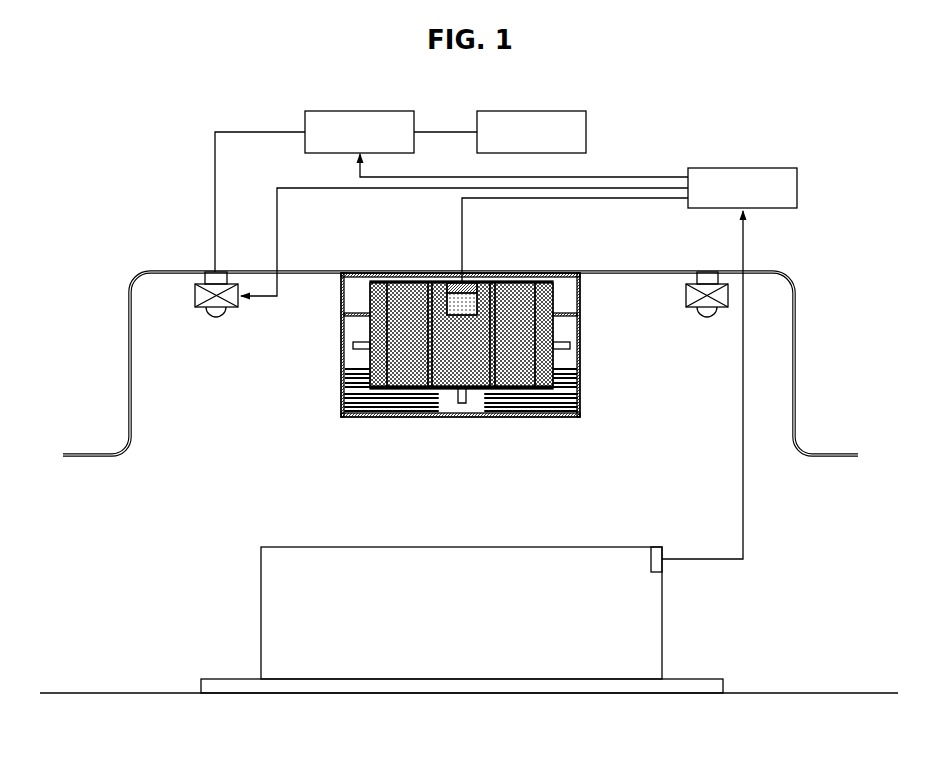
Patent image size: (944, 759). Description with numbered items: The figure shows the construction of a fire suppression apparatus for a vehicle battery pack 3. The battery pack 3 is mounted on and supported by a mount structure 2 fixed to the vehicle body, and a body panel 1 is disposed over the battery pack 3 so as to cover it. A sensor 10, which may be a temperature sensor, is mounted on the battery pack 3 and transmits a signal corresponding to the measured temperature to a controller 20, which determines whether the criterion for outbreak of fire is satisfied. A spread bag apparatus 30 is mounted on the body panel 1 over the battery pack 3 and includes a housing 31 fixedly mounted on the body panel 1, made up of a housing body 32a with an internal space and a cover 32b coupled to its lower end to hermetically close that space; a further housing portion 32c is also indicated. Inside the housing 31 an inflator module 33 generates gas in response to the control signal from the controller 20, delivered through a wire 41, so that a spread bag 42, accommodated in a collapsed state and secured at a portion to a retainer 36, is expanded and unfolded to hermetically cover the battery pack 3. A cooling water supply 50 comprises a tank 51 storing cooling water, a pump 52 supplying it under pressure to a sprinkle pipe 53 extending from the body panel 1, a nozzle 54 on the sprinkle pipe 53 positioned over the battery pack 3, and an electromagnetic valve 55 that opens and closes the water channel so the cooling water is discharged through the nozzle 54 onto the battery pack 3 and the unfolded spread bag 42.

The body panel 1 is at (797, 370).
The mount structure 2 is at (227, 684).
The battery pack 3 is at (268, 569).
The sensor 10 is at (656, 552).
The controller 20 is at (785, 168).
The spread bag apparatus 30 is at (477, 359).
The housing 31 is at (524, 423).
The housing body 32a is at (580, 393).
The cover 32b is at (550, 417).
The bottom plate 32c is at (462, 417).
The inflator module 33 is at (355, 328).
The retainer 36 is at (428, 390).
The wire 41 is at (462, 248).
The spread bag 42 is at (370, 407).
The cooling water supply 50 is at (170, 313).
The tank 51 is at (586, 131).
The pump 52 is at (305, 119).
The sprinkle pipe 53 is at (213, 277).
The nozzle 54 is at (216, 310).
The electromagnetic valve 55 is at (194, 290).